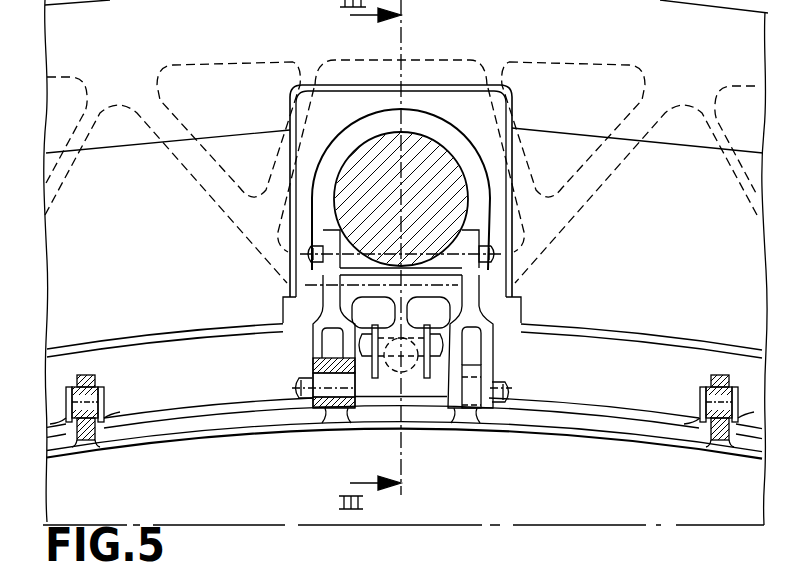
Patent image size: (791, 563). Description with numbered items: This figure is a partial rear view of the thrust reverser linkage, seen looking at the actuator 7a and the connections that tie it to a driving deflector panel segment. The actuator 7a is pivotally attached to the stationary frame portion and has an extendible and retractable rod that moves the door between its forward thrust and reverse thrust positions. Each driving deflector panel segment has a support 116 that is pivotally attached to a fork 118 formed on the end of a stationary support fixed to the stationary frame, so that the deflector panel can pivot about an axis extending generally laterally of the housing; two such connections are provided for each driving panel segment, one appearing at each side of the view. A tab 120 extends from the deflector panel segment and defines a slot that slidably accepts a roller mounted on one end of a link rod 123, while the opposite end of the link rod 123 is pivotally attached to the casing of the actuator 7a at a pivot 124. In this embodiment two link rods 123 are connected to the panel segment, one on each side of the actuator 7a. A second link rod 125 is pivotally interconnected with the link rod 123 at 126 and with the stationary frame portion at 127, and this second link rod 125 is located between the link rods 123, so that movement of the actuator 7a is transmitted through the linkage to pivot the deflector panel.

The actuator 7a is at (424, 146).
The support 116 is at (712, 445).
The fork 118 is at (737, 386).
The tab 120 is at (327, 408).
The link rod 123 is at (474, 314).
The pivot 124 is at (494, 262).
The second link rod 125 is at (299, 282).
The pivotal connection of second link rod to link rod 126 is at (499, 294).
The pivotal connection of second link rod to stationary frame portion 127 is at (455, 338).